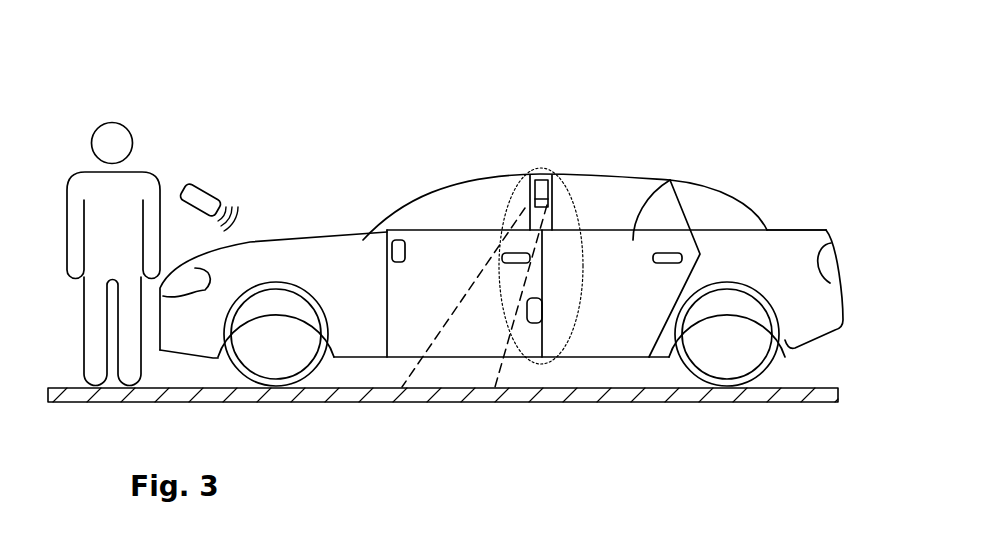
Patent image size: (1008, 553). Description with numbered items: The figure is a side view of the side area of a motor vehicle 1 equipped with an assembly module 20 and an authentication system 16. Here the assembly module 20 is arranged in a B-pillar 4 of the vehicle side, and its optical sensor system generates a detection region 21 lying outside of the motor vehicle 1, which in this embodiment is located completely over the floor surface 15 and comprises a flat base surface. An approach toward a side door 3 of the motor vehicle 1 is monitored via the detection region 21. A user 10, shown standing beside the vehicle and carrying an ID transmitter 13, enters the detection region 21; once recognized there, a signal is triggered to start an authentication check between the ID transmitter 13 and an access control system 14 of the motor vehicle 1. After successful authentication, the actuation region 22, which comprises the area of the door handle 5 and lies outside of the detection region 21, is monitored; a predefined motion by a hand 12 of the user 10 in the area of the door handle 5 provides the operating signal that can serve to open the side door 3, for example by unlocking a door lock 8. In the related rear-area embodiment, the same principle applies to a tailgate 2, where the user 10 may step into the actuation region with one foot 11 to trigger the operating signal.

The motor vehicle 1 is at (760, 130).
The tailgate 2 is at (800, 228).
The side door 3 is at (431, 255).
The B-pillar 4 is at (588, 176).
The door handle 5 is at (510, 250).
The door lock 8 is at (538, 315).
The user 10 is at (103, 112).
The foot 11 is at (128, 382).
The hand 12 is at (148, 265).
The ID transmitter 13 is at (193, 194).
The access control system 14 is at (390, 248).
The floor surface 15 is at (815, 393).
The authentication system 16 is at (238, 50).
The assembly module 20 is at (548, 180).
The detection region 21 is at (567, 245).
The actuation region 22 is at (523, 253).